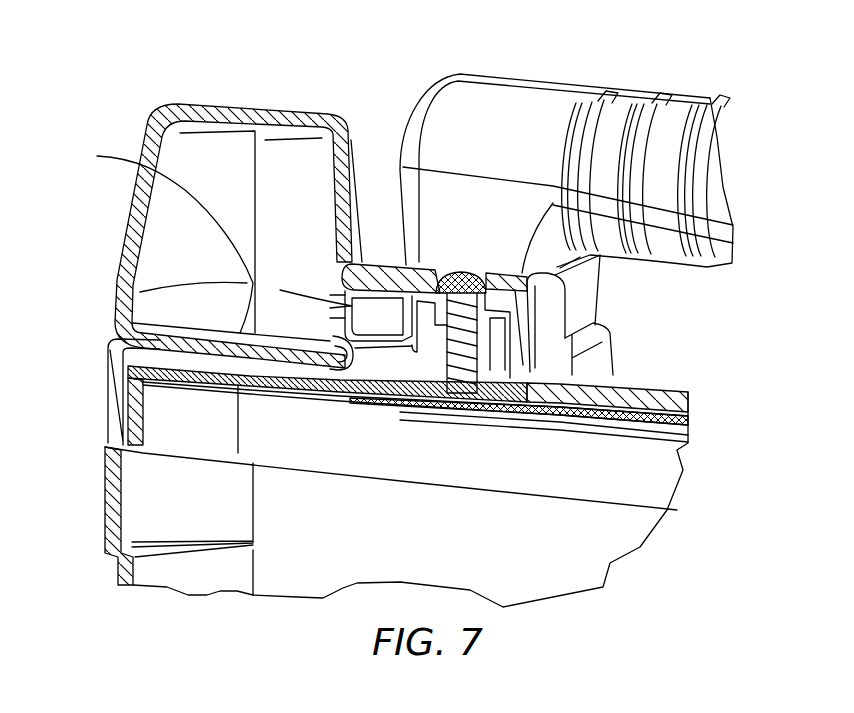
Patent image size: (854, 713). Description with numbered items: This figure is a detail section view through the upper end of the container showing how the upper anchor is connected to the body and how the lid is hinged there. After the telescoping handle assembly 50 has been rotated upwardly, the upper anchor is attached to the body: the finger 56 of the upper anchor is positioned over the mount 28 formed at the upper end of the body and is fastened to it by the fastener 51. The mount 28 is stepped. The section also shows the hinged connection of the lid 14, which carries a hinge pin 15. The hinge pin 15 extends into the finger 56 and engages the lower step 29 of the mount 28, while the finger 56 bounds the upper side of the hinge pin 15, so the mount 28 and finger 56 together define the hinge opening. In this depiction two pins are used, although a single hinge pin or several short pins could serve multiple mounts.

The lid 14 is at (152, 148).
The hinge pin 15 is at (162, 239).
The finger 56 is at (412, 262).
The fastener 51 is at (479, 271).
The telescoping handle assembly 50 is at (572, 67).
The lower step 29 is at (380, 356).
The mount 28 is at (412, 374).